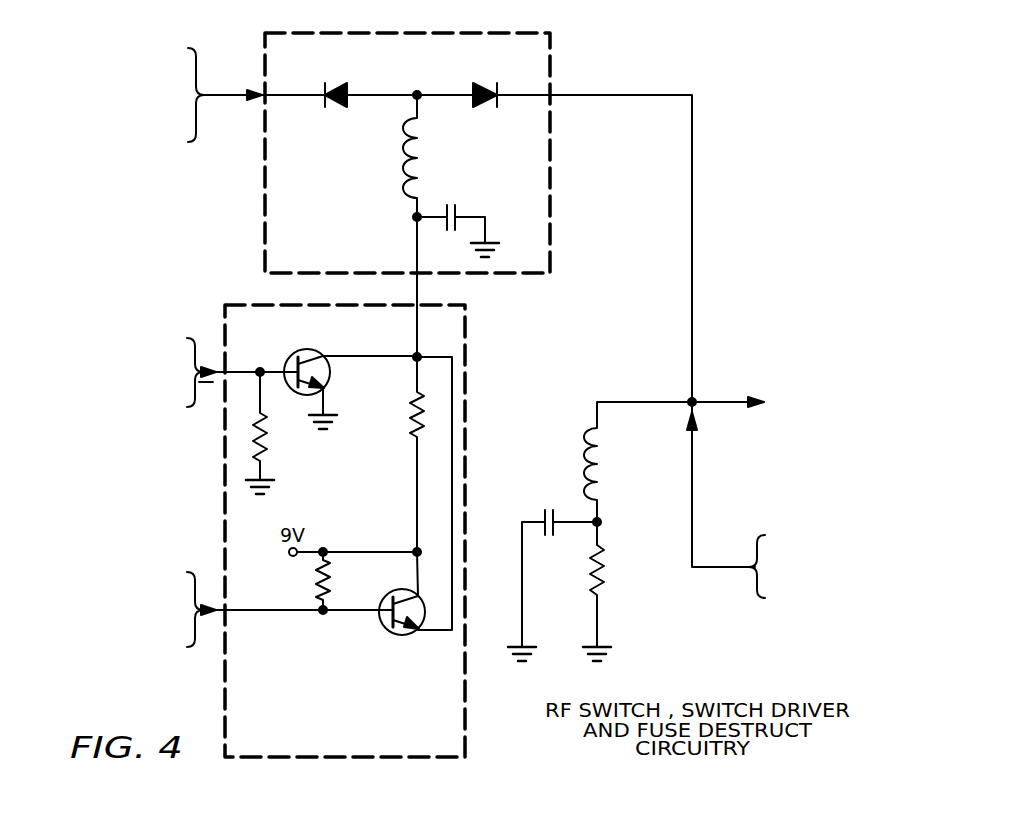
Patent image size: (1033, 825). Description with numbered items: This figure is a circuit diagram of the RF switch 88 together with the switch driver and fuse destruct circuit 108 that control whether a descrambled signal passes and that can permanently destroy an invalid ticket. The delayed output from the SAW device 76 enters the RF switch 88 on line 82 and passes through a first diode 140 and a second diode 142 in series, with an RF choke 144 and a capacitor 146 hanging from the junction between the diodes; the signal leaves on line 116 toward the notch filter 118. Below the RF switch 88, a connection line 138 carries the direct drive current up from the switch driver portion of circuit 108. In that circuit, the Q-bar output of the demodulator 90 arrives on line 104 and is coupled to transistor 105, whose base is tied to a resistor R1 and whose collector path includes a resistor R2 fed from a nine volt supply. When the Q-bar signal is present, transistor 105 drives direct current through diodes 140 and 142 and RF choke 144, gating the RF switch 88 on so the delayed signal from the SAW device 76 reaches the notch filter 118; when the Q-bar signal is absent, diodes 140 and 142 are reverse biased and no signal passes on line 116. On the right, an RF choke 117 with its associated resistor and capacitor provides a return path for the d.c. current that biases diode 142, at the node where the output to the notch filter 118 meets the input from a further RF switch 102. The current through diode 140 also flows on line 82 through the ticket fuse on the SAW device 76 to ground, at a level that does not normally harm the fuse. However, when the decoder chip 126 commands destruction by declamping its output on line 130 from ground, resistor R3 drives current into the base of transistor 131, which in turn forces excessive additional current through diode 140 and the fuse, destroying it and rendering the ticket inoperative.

The RF switch 88 is at (262, 50).
The line 82 is at (230, 97).
The SAW device 76 is at (107, 95).
The diode 140 is at (335, 82).
The diode 142 is at (487, 107).
The line 116 is at (634, 95).
The RF choke 144 is at (400, 190).
The capacitor 146 is at (452, 205).
The connection line between RF switch and switch driver 138 is at (418, 290).
The switch driver and fuse destruct circuit 108 is at (468, 372).
The demodulator 90 is at (119, 372).
The line 104 is at (213, 370).
The transistor 105 is at (315, 350).
The decoder chip 126 is at (144, 609).
The line 130 is at (214, 608).
The transistor 131 is at (381, 626).
The notch filter 118 is at (778, 404).
The RF switch 102 is at (814, 567).
The RF choke 117 is at (578, 430).
The resistor R1 is at (271, 433).
The resistor R2 is at (401, 454).
The resistor R3 is at (307, 581).